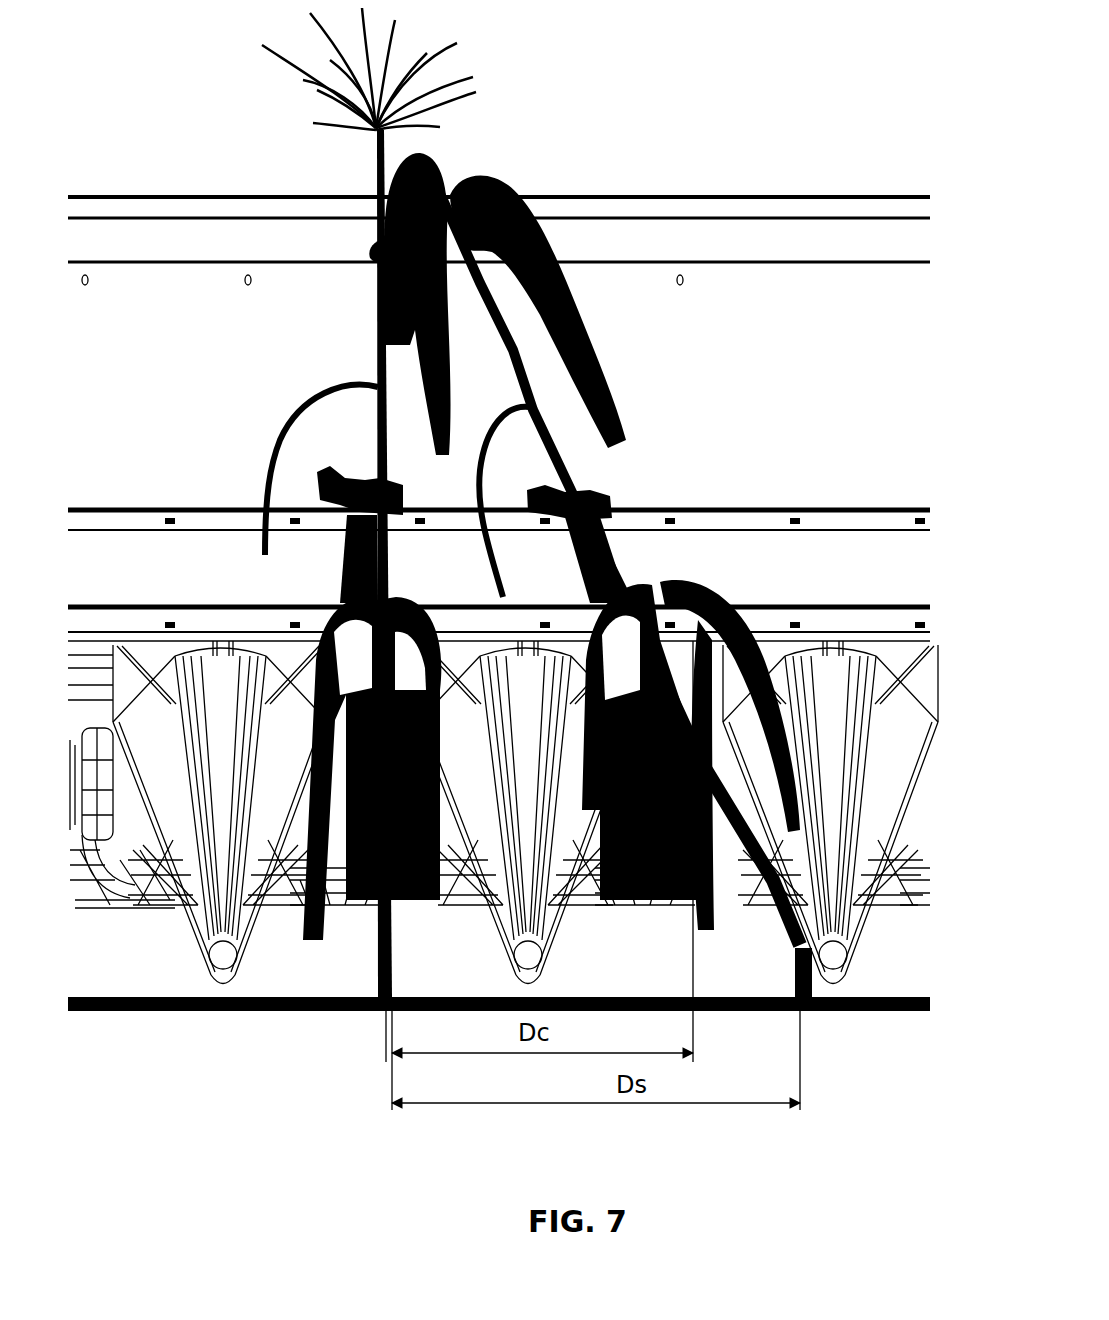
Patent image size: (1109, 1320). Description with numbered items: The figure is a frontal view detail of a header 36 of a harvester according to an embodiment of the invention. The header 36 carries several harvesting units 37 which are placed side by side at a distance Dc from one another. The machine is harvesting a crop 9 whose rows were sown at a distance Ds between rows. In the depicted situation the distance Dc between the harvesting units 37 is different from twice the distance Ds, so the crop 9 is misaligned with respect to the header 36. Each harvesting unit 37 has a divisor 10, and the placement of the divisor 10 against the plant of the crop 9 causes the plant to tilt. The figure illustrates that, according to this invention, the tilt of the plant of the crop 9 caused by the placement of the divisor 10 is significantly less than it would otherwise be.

The header 36 is at (778, 188).
The divisor 10 is at (891, 777).
The harvesting unit 37 is at (128, 900).
The crop 9 is at (786, 977).